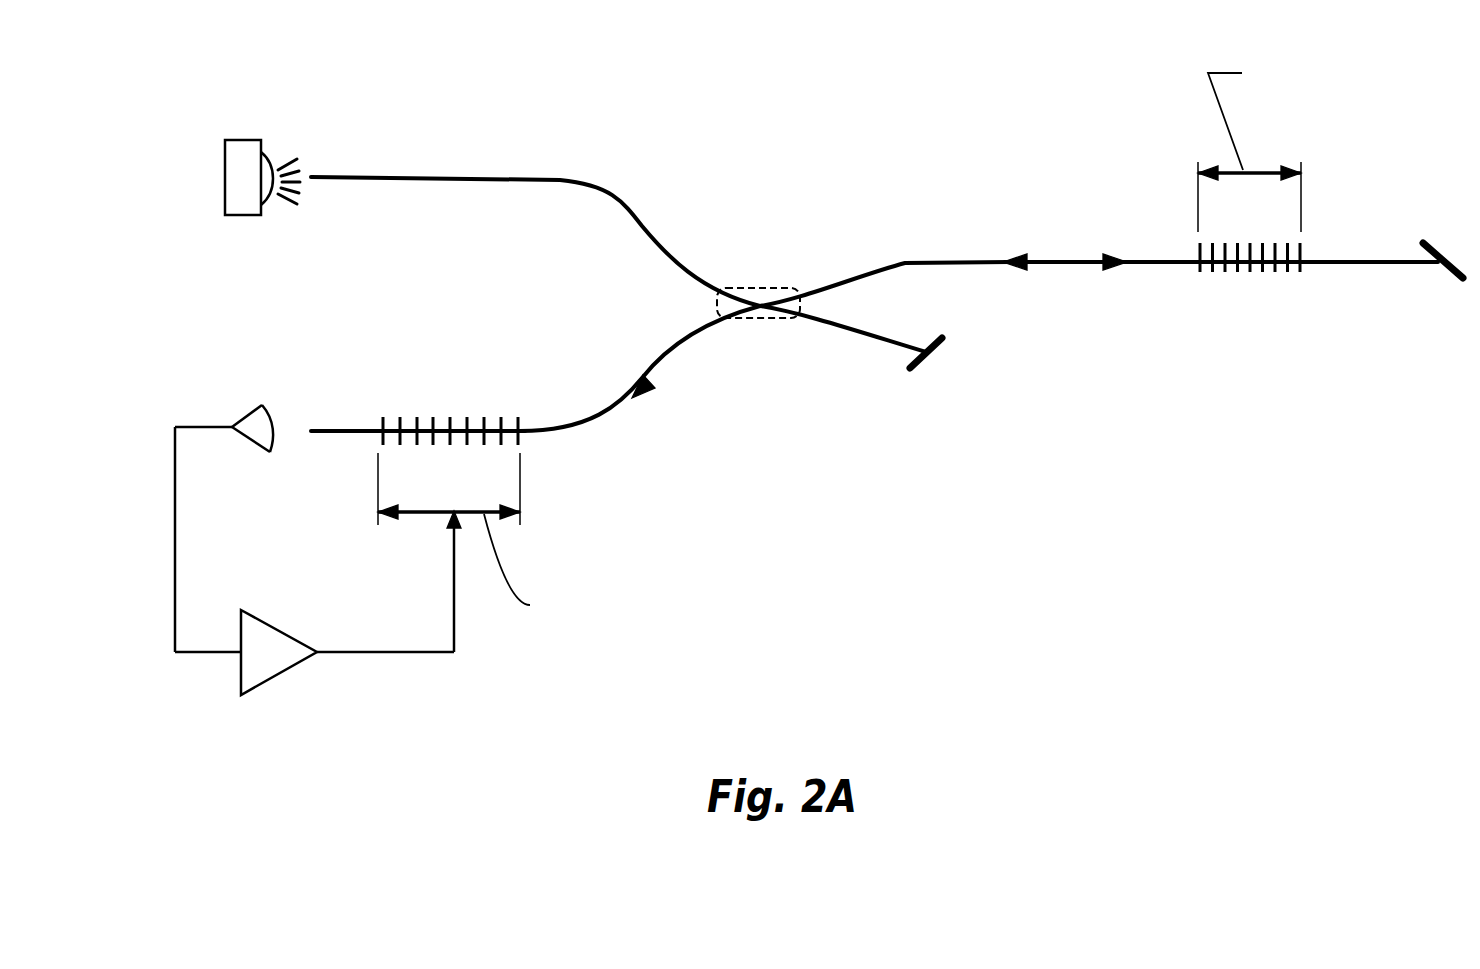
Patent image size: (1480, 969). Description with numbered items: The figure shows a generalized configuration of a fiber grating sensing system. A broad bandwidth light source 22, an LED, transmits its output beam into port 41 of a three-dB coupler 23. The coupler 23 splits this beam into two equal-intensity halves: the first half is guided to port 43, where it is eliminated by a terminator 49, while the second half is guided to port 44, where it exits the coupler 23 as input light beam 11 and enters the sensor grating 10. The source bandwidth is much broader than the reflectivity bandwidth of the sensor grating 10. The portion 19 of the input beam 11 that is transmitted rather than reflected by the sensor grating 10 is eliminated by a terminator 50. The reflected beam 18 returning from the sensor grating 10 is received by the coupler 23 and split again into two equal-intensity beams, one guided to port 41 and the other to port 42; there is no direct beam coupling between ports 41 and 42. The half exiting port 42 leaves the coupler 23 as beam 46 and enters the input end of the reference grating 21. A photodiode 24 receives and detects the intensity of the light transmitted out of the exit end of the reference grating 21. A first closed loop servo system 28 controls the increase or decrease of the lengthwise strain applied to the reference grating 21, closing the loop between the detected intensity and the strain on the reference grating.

The broad bandwidth light source 22 is at (248, 148).
The coupler port 41 is at (680, 277).
The 3 dB coupler 23 is at (757, 286).
The coupler port 42 is at (687, 335).
The light beam 46 is at (648, 402).
The coupler port 43 is at (890, 345).
The terminator 49 is at (940, 342).
The coupler port 44 is at (866, 272).
The transmitted portion of input beam 19 is at (1392, 264).
The reflected beam 18 is at (1022, 252).
The input light beam 11 is at (1110, 252).
The sensor grating 10 is at (1262, 290).
The terminator 50 is at (1450, 277).
The reference grating 21 is at (474, 399).
The photodiode 24 is at (263, 403).
The closed loop servo system 28 is at (280, 672).